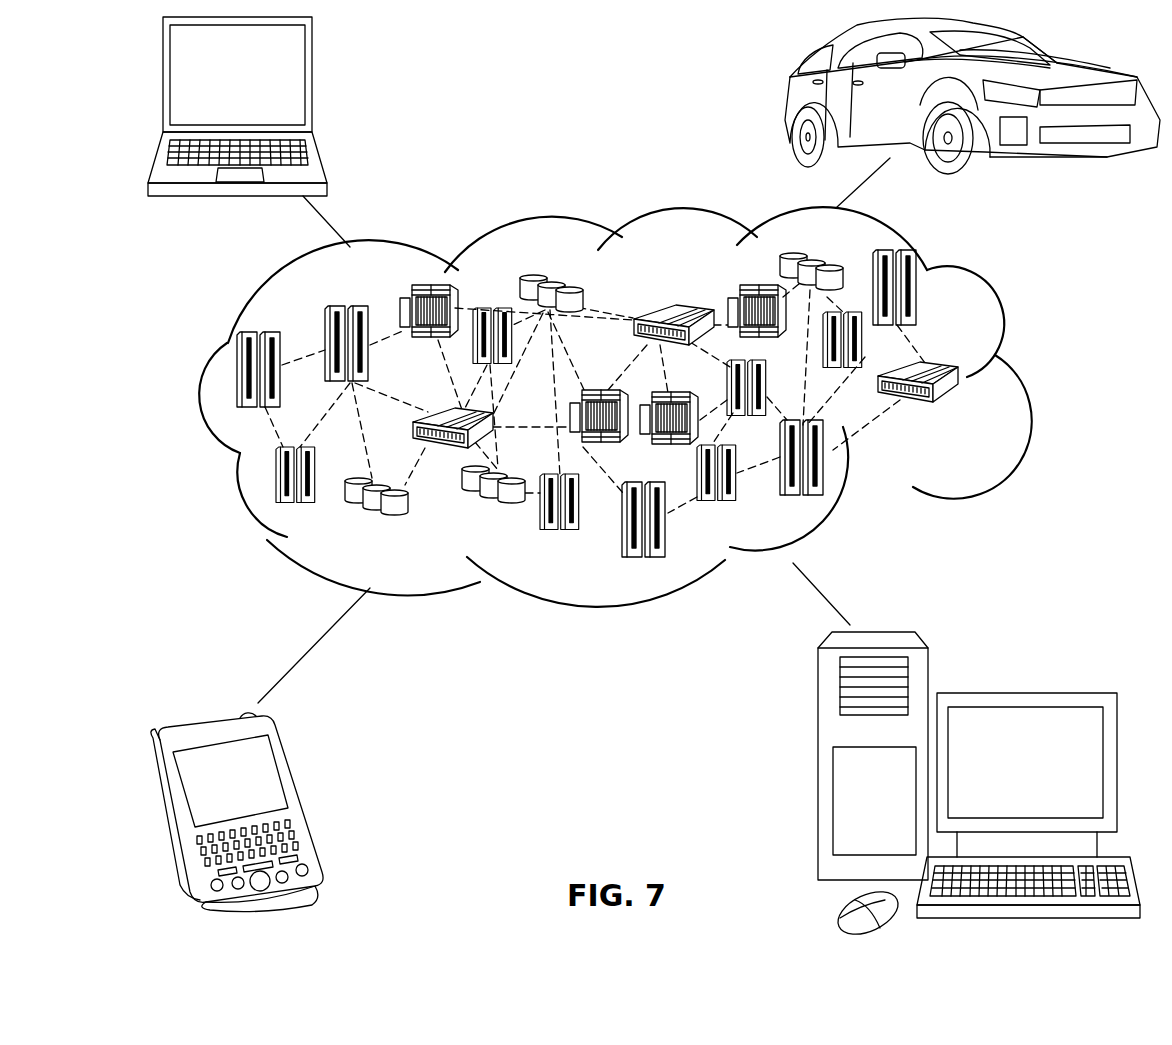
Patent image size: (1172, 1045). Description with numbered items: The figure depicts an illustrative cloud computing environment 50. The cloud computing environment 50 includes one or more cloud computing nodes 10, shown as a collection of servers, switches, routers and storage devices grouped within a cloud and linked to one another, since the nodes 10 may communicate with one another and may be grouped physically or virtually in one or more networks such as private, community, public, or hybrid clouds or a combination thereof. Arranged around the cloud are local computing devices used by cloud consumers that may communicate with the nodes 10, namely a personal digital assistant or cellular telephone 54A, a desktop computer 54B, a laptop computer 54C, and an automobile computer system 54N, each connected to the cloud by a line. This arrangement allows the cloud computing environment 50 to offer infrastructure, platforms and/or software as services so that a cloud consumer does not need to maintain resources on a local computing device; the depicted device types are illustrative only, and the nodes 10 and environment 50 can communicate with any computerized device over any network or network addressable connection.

The cloud computing environment 50 is at (648, 407).
The cloud computing node 10 is at (962, 413).
The personal digital assistant (PDA) or cellular telephone 54A is at (302, 797).
The desktop computer 54B is at (1028, 693).
The laptop computer 54C is at (312, 82).
The automobile computer system 54N is at (787, 100).